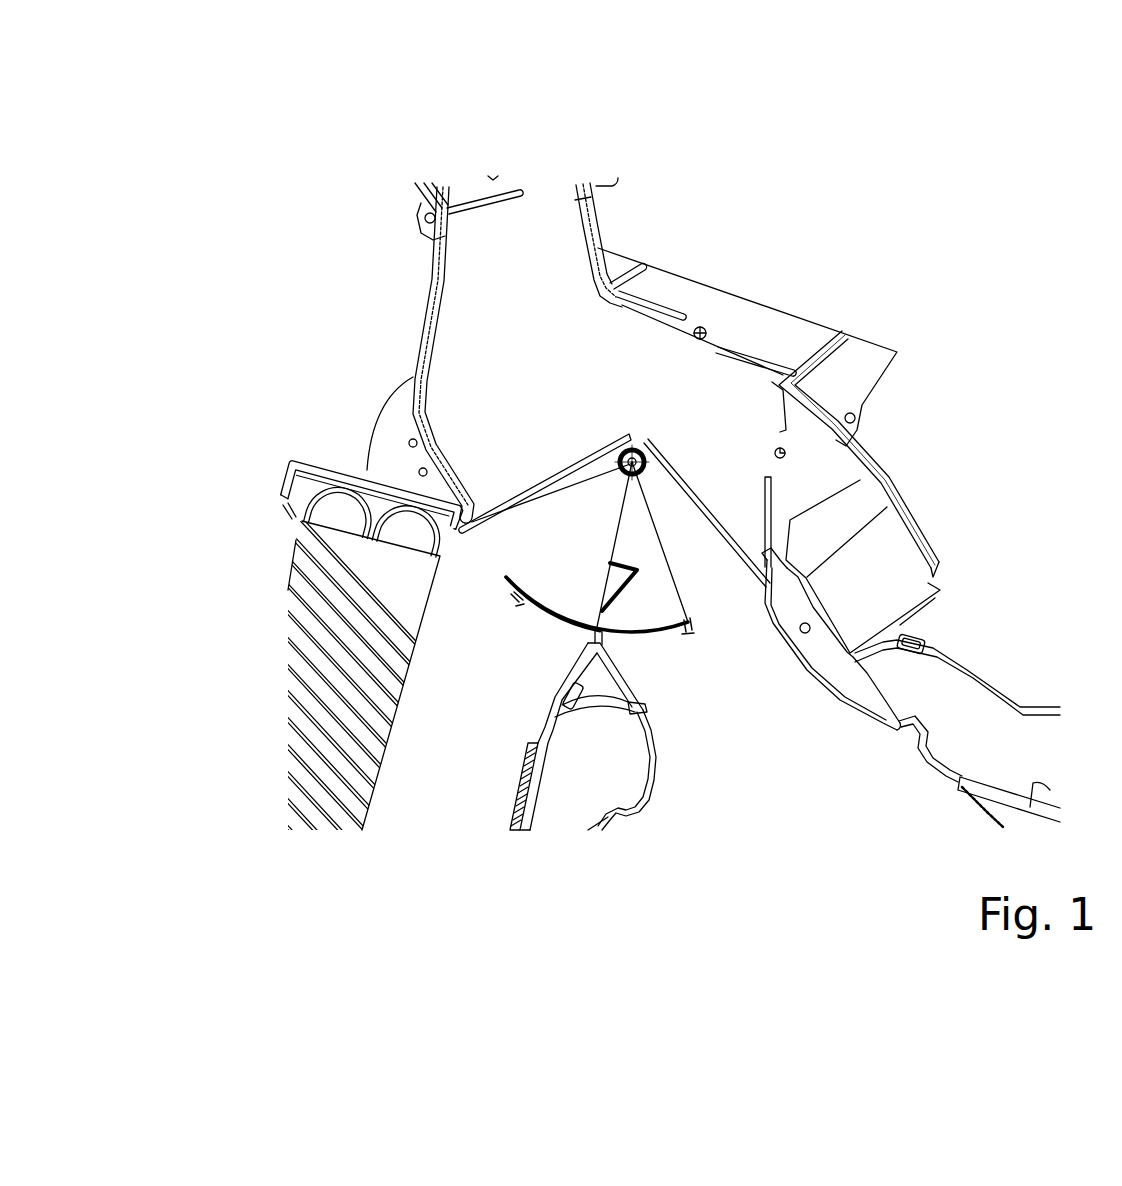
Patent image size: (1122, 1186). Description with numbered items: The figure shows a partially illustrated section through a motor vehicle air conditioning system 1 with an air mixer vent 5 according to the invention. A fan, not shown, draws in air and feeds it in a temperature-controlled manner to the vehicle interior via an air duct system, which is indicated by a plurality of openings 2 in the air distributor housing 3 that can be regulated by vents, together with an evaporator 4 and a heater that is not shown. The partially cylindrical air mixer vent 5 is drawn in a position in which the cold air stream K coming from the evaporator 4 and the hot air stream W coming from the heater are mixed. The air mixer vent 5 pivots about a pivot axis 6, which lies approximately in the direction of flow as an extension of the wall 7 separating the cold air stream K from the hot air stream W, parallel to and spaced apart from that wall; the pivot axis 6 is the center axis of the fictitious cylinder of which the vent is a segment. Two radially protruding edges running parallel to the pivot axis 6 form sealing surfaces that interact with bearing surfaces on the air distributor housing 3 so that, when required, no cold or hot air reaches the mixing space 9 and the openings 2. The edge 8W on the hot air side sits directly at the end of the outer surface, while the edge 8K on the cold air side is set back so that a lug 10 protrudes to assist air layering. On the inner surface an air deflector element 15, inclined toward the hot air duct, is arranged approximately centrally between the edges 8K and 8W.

The motor vehicle air conditioning system 1 is at (245, 345).
The openings 2 is at (525, 195).
The air distributor housing 3 is at (963, 668).
The evaporator 4 is at (327, 637).
The air mixer vent 5 is at (548, 610).
The pivot axis 6 is at (632, 462).
The wall 7 is at (597, 640).
The edge on the cold air duct side 8K is at (517, 597).
The edge on the hot air duct side 8W is at (688, 624).
The mixing space 9 is at (574, 420).
The lug 10 is at (505, 578).
The air deflector element 15 is at (602, 611).
The cold air stream K is at (507, 642).
The hot air stream W is at (716, 688).